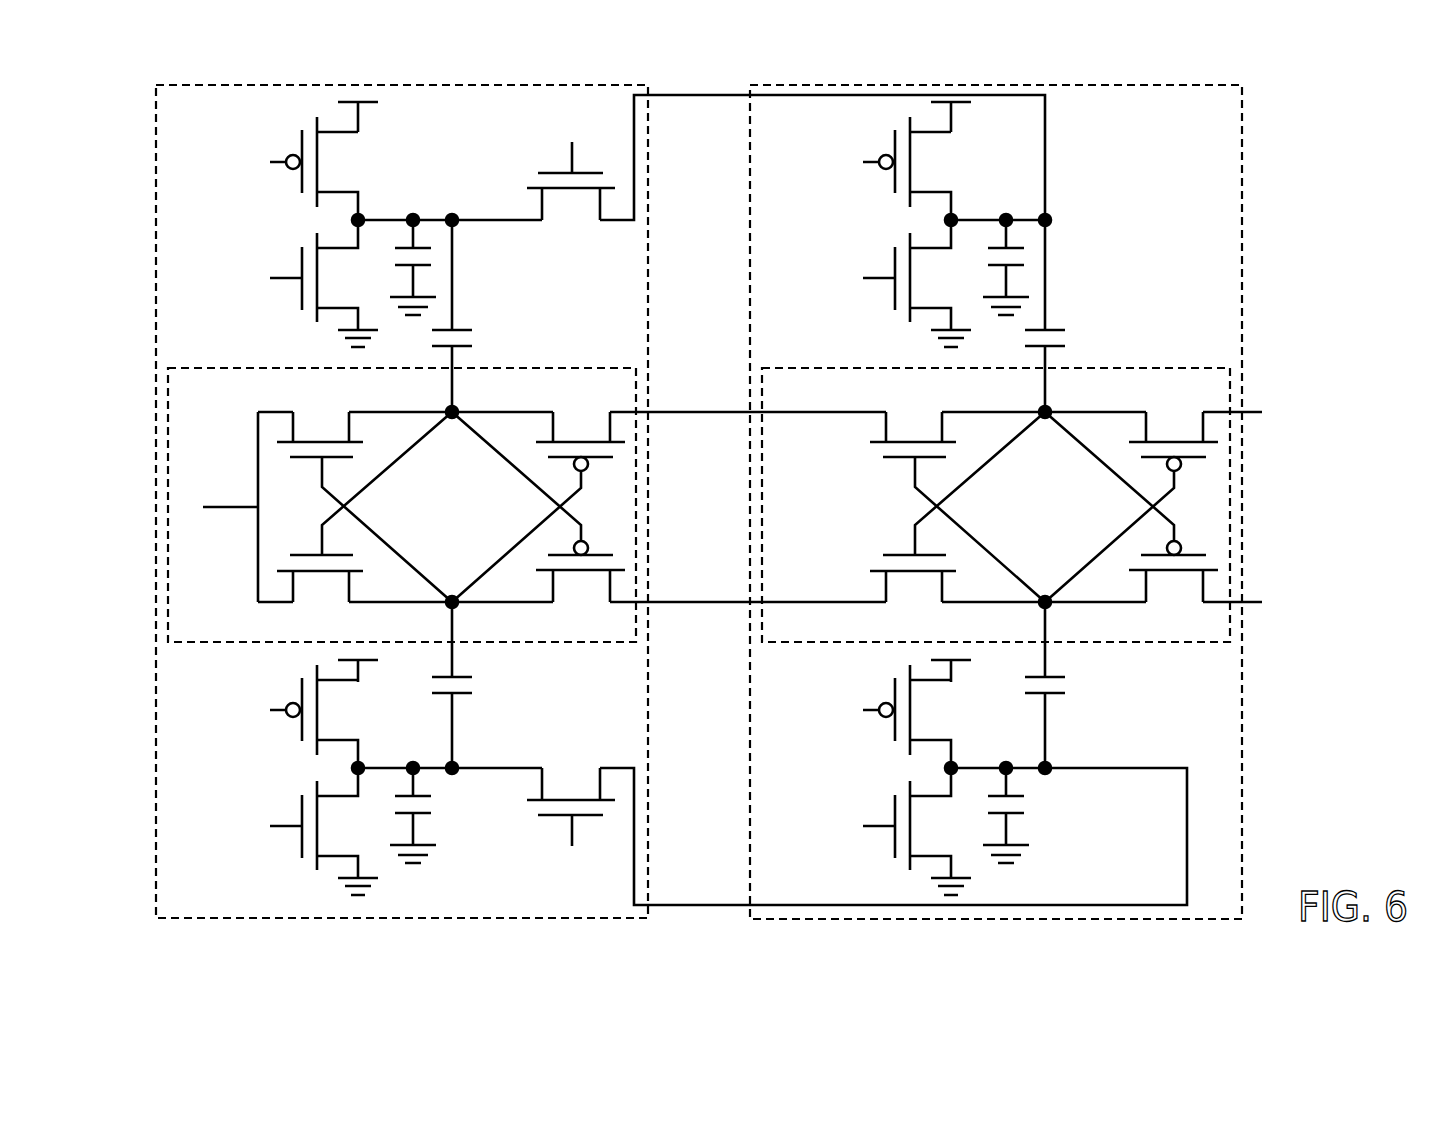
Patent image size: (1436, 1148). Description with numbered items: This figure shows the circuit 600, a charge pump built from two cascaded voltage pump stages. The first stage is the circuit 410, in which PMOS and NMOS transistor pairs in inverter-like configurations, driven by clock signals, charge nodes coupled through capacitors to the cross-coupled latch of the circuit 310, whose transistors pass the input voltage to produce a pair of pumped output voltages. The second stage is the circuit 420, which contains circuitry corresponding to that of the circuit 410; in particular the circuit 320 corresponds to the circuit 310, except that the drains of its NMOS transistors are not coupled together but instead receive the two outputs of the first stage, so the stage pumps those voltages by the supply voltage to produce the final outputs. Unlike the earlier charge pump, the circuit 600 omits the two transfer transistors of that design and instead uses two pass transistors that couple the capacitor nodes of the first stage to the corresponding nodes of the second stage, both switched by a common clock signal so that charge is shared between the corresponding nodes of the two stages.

The circuit 600 is at (1325, 110).
The circuit 410 is at (215, 127).
The circuit 420 is at (1230, 127).
The circuit 310 is at (215, 400).
The circuit 320 is at (825, 447).